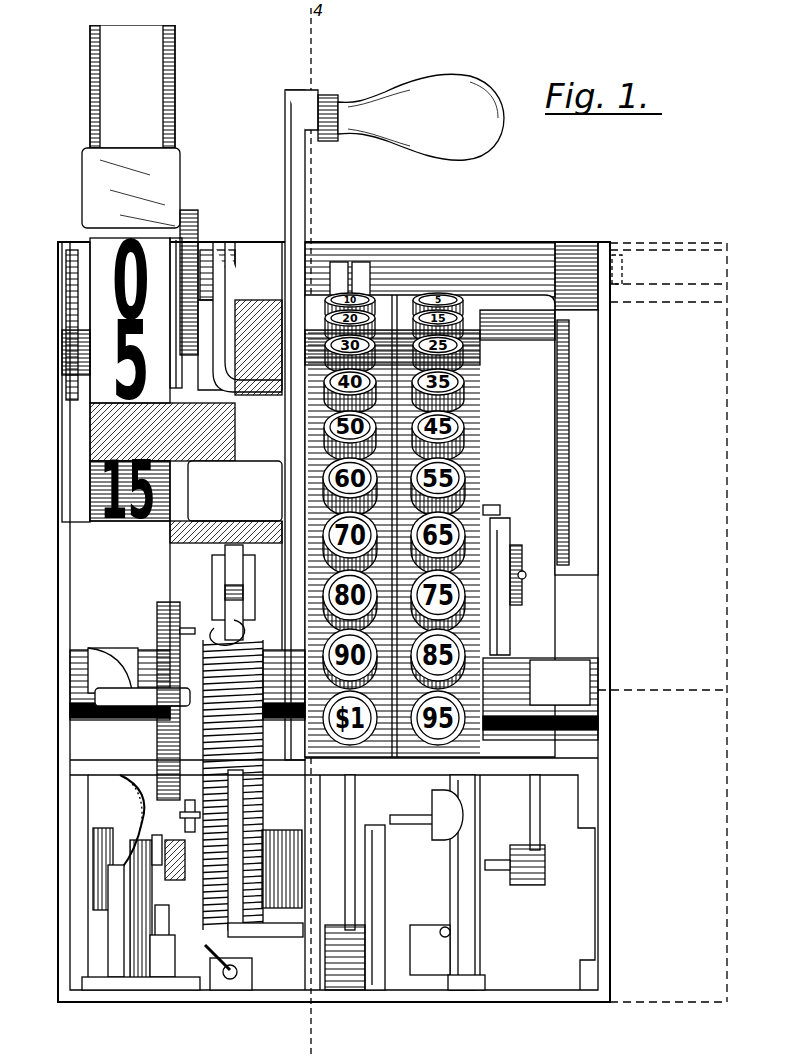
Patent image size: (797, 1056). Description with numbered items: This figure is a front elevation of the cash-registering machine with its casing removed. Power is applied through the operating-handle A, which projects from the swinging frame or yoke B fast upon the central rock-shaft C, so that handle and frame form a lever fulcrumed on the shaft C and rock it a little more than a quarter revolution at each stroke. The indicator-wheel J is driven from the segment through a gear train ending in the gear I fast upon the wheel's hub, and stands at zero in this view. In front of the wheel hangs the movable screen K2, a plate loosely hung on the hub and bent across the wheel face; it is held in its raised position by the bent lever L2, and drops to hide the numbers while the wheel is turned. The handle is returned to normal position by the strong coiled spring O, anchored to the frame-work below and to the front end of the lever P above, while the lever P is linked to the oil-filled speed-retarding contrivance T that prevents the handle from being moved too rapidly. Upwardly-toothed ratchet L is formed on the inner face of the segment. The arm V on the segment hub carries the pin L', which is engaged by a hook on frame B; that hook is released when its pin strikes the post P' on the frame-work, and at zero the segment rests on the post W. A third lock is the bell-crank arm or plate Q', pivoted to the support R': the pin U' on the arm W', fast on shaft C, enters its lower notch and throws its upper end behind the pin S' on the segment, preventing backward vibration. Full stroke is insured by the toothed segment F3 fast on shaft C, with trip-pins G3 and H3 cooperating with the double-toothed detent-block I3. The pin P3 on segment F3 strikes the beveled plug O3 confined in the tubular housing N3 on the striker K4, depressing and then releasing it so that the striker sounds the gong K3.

The operating-handle A is at (305, 226).
The indicator-wheel J is at (176, 98).
The movable screen K2 is at (82, 184).
The gear I is at (198, 222).
The bent lever L2 is at (186, 362).
The swinging frame or yoke B is at (228, 524).
The lever P is at (241, 595).
The trip-pin G3 is at (214, 607).
The toothed segment F3 is at (157, 628).
The coiled spring O is at (263, 670).
The pin P3 is at (95, 696).
The central rock-shaft C is at (292, 722).
The plug O3 is at (112, 824).
The trip-pin H3 is at (190, 804).
The gong K3 is at (52, 836).
The tubular housing N3 is at (108, 872).
The striker K4 is at (118, 922).
The double-toothed pivoted detent-block I3 is at (168, 906).
The speed-retarding contrivance T is at (274, 834).
The pin L' is at (415, 803).
The arm V is at (442, 828).
The ratchet L is at (405, 921).
The post P' is at (390, 907).
The post W is at (454, 882).
The arm W' is at (519, 812).
The pin U' is at (515, 877).
The pin S' is at (500, 494).
The support R' is at (526, 563).
The bell-crank arm or plate Q' is at (515, 586).